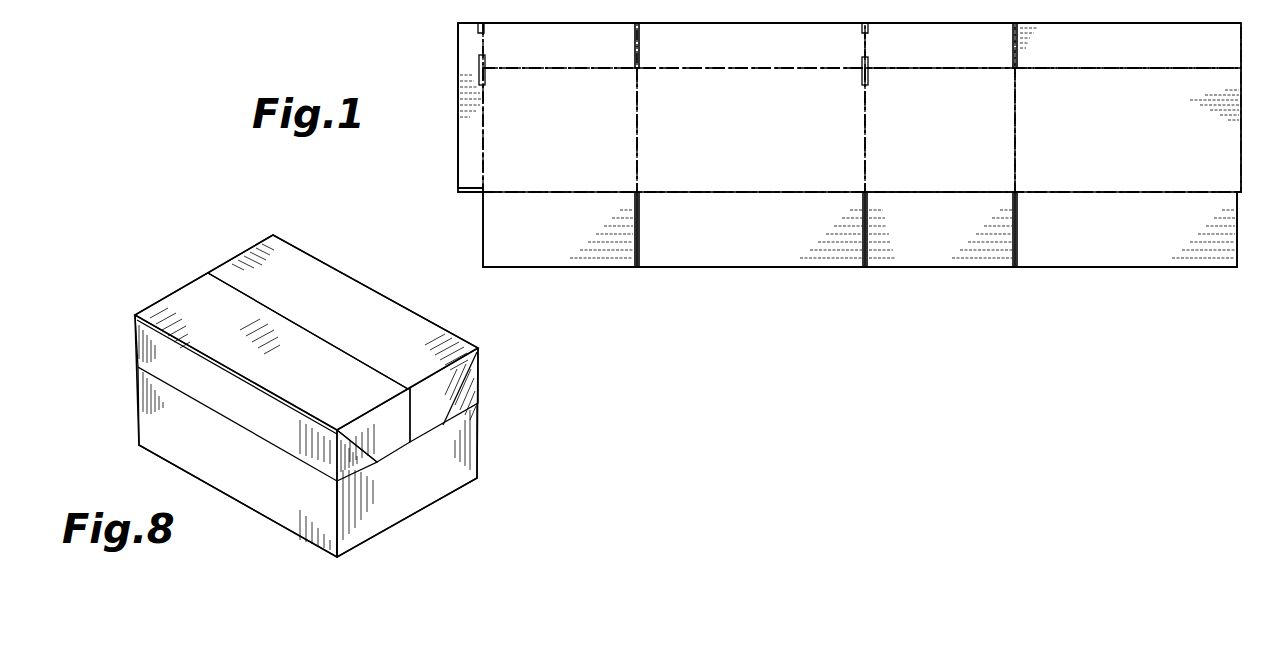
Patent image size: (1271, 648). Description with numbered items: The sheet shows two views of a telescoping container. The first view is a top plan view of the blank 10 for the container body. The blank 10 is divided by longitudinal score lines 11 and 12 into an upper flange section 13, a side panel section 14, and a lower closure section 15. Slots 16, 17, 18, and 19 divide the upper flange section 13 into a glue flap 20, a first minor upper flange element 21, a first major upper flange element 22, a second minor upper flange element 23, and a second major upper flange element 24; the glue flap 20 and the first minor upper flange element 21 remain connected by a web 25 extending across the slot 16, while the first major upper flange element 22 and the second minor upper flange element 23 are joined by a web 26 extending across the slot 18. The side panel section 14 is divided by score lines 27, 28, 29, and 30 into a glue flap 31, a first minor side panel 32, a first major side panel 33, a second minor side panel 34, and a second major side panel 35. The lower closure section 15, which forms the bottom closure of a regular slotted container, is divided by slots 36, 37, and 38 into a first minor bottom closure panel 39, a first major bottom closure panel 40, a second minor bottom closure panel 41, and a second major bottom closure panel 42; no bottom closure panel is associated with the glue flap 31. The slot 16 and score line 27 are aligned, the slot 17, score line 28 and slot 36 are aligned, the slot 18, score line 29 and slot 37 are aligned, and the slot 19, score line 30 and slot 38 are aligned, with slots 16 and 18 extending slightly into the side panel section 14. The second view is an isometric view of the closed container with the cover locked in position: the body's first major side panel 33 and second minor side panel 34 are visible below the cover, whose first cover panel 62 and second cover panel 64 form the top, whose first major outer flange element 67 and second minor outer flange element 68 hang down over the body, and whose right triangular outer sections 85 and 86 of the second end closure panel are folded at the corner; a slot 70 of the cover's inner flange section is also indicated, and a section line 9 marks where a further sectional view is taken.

In FIG. 8, the section line 9- 9 is at (132, 228).
In FIG. 1, the blank 10 is at (827, 298).
In FIG. 1, the longitudinal score line 11 is at (528, 70).
In FIG. 1, the longitudinal score line 12 is at (580, 192).
In FIG. 1, the upper flange section 13 is at (440, 49).
In FIG. 1, the side panel section 14 is at (450, 153).
In FIG. 1, the lower closure section 15 is at (466, 226).
In FIG. 1, the slot 16 is at (486, 50).
In FIG. 1, the slot 17 is at (637, 23).
In FIG. 1, the slot 18 is at (861, 58).
In FIG. 1, the slot 19 is at (1017, 23).
In FIG. 1, the glue flap 20 is at (460, 63).
In FIG. 1, the first minor upper flange element 21 is at (590, 56).
In FIG. 1, the first major upper flange element 22 is at (750, 56).
In FIG. 1, the second minor upper flange element 23 is at (965, 56).
In FIG. 1, the second major upper flange element 24 is at (1135, 56).
In FIG. 1, the web 25 is at (483, 43).
In FIG. 1, the web 26 is at (870, 48).
In FIG. 1, the score line 27 is at (487, 143).
In FIG. 1, the score line 28 is at (640, 138).
In FIG. 1, the score line 29 is at (868, 136).
In FIG. 1, the score line 30 is at (1017, 143).
In FIG. 1, the glue flap 31 is at (462, 121).
In FIG. 1, the first minor side panel 32 is at (590, 139).
In FIG. 1, the first major side panel 33 is at (770, 141).
In FIG. 8, the first major side panel 33 is at (246, 469).
In FIG. 1, the second minor side panel 34 is at (975, 142).
In FIG. 8, the second minor side panel 34 is at (420, 497).
In FIG. 1, the second major side panel 35 is at (1145, 142).
In FIG. 1, the slot 36 is at (637, 270).
In FIG. 1, the slot 37 is at (865, 270).
In FIG. 1, the slot 38 is at (1015, 270).
In FIG. 1, the first minor bottom closure panel 39 is at (570, 239).
In FIG. 1, the first major bottom closure panel 40 is at (760, 239).
In FIG. 1, the second minor bottom closure panel 41 is at (946, 242).
In FIG. 1, the second major bottom closure panel 42 is at (1120, 242).
In FIG. 8, the first cover panel 62 is at (300, 372).
In FIG. 8, the second cover panel 64 is at (354, 324).
In FIG. 8, the first major outer flange element 67 is at (246, 409).
In FIG. 8, the second minor outer flange element 68 is at (474, 388).
In FIG. 1, the slot 70 is at (420, 0).
In FIG. 8, the right triangular outer section 85 is at (393, 444).
In FIG. 8, the right triangular outer section 86 is at (446, 414).